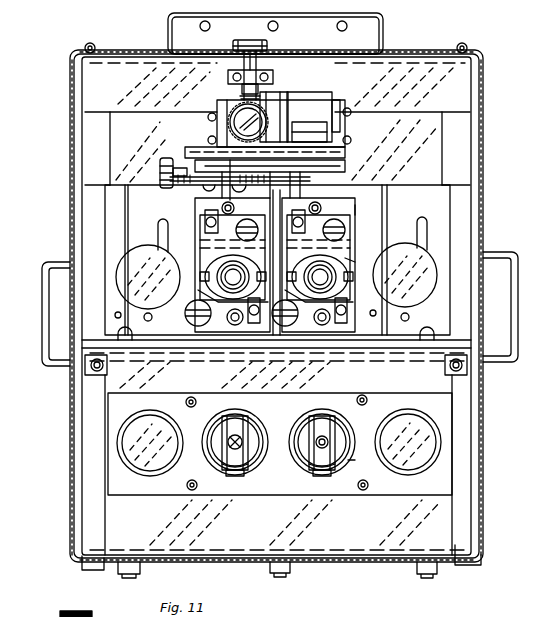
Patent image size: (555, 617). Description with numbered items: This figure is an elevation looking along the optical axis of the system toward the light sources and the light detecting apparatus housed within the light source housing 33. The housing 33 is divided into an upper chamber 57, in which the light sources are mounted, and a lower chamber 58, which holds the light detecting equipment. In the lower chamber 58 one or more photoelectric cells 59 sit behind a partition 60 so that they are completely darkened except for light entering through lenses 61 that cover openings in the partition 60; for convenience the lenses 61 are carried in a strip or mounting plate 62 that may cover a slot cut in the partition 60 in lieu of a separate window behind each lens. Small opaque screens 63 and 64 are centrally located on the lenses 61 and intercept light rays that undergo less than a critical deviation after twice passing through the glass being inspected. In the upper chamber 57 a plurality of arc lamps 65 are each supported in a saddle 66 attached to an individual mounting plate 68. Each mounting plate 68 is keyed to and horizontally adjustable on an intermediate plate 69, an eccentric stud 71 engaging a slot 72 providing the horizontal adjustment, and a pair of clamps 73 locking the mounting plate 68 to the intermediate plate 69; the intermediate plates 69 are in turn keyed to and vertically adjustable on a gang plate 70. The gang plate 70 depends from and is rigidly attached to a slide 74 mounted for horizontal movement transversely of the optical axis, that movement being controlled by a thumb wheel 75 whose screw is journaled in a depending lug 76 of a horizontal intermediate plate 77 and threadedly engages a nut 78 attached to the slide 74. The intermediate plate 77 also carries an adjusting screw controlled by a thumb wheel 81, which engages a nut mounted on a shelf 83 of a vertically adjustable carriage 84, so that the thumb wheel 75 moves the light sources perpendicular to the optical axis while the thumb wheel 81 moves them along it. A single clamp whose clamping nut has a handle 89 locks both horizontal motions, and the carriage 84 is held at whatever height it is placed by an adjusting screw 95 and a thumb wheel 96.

The light source housing 33 is at (68, 99).
The upper chamber 57 is at (430, 162).
The thumb wheel 96 is at (233, 45).
The adjusting screw 95 is at (260, 70).
The thumb wheel 81 is at (232, 115).
The handle 89 is at (278, 96).
The vertically adjustable carriage 84 is at (322, 96).
The shelf 83 is at (298, 138).
The horizontal intermediate plate 77 is at (340, 150).
The slide 74 is at (330, 168).
The thumb wheel 75 is at (163, 188).
The gang plate 70 is at (112, 212).
The arc lamp 65 is at (205, 275).
The saddle 66 is at (200, 297).
The depending lug 76 is at (205, 215).
The intermediate plate 69 is at (225, 214).
The mounting plate 68 is at (210, 262).
The nut 78 is at (244, 262).
The clamp 73 is at (330, 261).
The eccentric stud 71 is at (340, 215).
The slot 72 is at (330, 262).
The lower chamber 58 is at (462, 410).
The mounting plate 62 is at (345, 402).
The partition 60 is at (132, 510).
The lens 61 is at (297, 432).
The opaque screen 63 is at (328, 442).
The opaque screen 64 is at (244, 448).
The photoelectric cell 59 is at (361, 465).